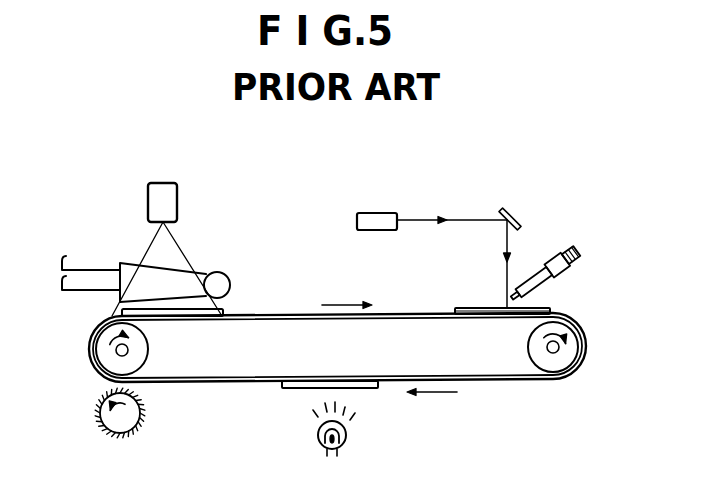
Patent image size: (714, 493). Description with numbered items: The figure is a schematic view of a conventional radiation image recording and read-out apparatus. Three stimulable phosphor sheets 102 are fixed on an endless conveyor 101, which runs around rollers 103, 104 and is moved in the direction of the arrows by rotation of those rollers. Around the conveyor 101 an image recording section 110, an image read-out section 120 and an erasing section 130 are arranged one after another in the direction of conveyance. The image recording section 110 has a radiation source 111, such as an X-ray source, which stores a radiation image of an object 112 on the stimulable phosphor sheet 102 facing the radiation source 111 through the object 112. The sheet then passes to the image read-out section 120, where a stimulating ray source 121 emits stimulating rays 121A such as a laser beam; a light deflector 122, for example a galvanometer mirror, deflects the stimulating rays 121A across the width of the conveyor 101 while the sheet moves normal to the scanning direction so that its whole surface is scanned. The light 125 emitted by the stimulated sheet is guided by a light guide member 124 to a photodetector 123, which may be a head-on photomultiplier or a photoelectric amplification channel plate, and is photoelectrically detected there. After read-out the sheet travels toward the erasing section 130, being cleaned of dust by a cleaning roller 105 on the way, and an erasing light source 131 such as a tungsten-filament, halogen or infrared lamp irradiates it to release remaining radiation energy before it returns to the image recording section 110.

The endless conveyor 101 is at (562, 380).
The stimulable phosphor sheet 102 is at (230, 307).
The roller 103 is at (573, 358).
The roller 104 is at (92, 362).
The cleaning roller 105 is at (140, 414).
The image recording section 110 is at (195, 190).
The radiation source 111 is at (177, 208).
The object 112 is at (136, 256).
The image read-out section 120 is at (566, 198).
The stimulating ray source 121 is at (382, 232).
The stimulating rays 121A is at (427, 220).
The light deflector 122 is at (510, 208).
The photodetector 123 is at (563, 250).
The light guide member 124 is at (532, 277).
The light emitted by the stimulable phosphor sheet 125 is at (508, 318).
The erasing section 130 is at (359, 434).
The erasing light source 131 is at (317, 437).